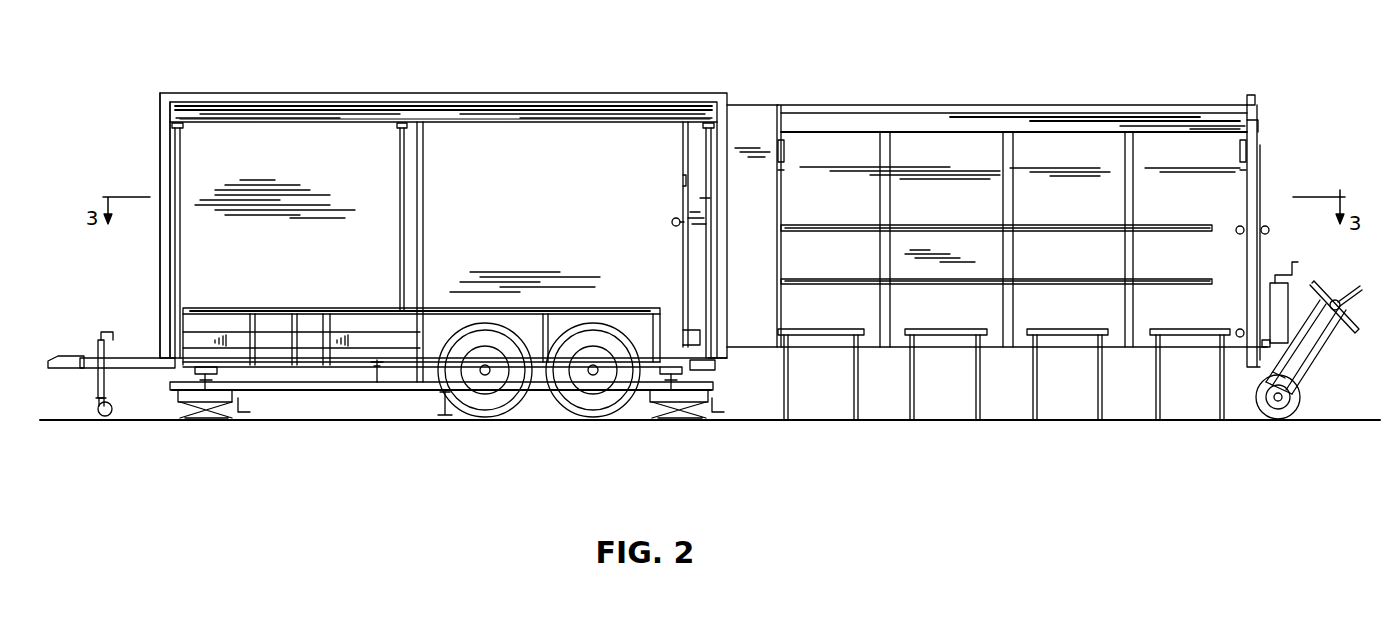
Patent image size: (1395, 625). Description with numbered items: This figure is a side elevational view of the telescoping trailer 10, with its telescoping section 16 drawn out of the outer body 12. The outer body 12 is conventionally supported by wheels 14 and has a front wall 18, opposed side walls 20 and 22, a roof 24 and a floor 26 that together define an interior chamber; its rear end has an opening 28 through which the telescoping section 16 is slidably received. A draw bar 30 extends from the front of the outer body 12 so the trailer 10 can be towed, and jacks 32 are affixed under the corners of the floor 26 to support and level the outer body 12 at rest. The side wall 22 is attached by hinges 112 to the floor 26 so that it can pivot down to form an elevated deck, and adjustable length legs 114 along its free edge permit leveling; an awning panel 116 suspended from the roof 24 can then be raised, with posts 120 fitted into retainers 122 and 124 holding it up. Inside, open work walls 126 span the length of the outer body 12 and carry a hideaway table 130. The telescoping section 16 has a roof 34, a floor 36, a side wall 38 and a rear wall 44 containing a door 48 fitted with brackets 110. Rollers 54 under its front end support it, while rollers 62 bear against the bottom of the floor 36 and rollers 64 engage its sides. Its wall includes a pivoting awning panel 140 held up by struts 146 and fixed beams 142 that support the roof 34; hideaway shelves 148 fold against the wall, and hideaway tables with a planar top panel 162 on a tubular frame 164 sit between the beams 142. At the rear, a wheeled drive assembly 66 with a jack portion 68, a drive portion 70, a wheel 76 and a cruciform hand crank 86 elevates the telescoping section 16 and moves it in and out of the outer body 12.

The telescoping trailer 10 is at (835, 60).
The outer body 12 is at (280, 90).
The wheels 14 is at (507, 405).
The telescoping section 16 is at (933, 102).
The front wall 18 is at (160, 160).
The side wall 20 is at (452, 236).
The side wall 22 is at (343, 392).
The roof 24 is at (364, 100).
The floor 26 is at (350, 352).
The opening 28 is at (733, 102).
The draw bar 30 is at (72, 357).
The jacks 32 is at (222, 405).
The roof 34 is at (1034, 108).
The floor 36 is at (1010, 348).
The side wall 38 is at (1067, 258).
The rear wall 44 is at (1256, 104).
The door 48 is at (1258, 130).
The rollers 54 is at (683, 315).
The rollers 62 is at (716, 372).
The rollers 64 is at (704, 342).
The wheeled drive assembly 66 is at (1336, 286).
The jack portion 68 is at (1290, 292).
The drive portion 70 is at (1325, 345).
The wheel 76 is at (1300, 410).
The hand crank 86 is at (1358, 292).
The brackets 110 is at (1258, 190).
The hinges 112 is at (215, 372).
The adjustable length legs 114 is at (718, 413).
The awning panel 116 is at (487, 118).
The posts 120 is at (175, 270).
The retainers 122 is at (175, 378).
The retainers 124 is at (172, 126).
The open work walls 126 is at (270, 320).
The hideaway table 130 is at (378, 308).
The awning panel 140 is at (1143, 123).
The fixed beams 142 is at (880, 152).
The struts 146 is at (784, 150).
The hideaway shelves 148 is at (848, 232).
The planar top panel 162 is at (940, 328).
The tubular frame 164 is at (948, 338).